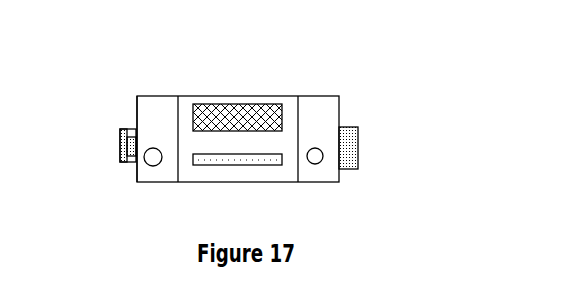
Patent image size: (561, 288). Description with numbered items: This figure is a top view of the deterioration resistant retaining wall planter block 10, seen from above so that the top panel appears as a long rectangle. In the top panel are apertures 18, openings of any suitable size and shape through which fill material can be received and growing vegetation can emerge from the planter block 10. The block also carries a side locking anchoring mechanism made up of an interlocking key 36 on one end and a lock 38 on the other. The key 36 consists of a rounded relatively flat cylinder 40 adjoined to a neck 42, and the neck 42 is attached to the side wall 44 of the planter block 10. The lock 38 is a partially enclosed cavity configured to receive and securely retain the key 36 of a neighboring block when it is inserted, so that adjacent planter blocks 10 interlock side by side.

The deterioration resistant retaining wall planter block 10 is at (155, 82).
The apertures 18 is at (215, 112).
The interlocking key 36 is at (124, 158).
The lock 38 is at (348, 153).
The rounded relatively flat cylinder 40 is at (122, 151).
The neck 42 is at (130, 144).
The side wall 44 is at (137, 113).